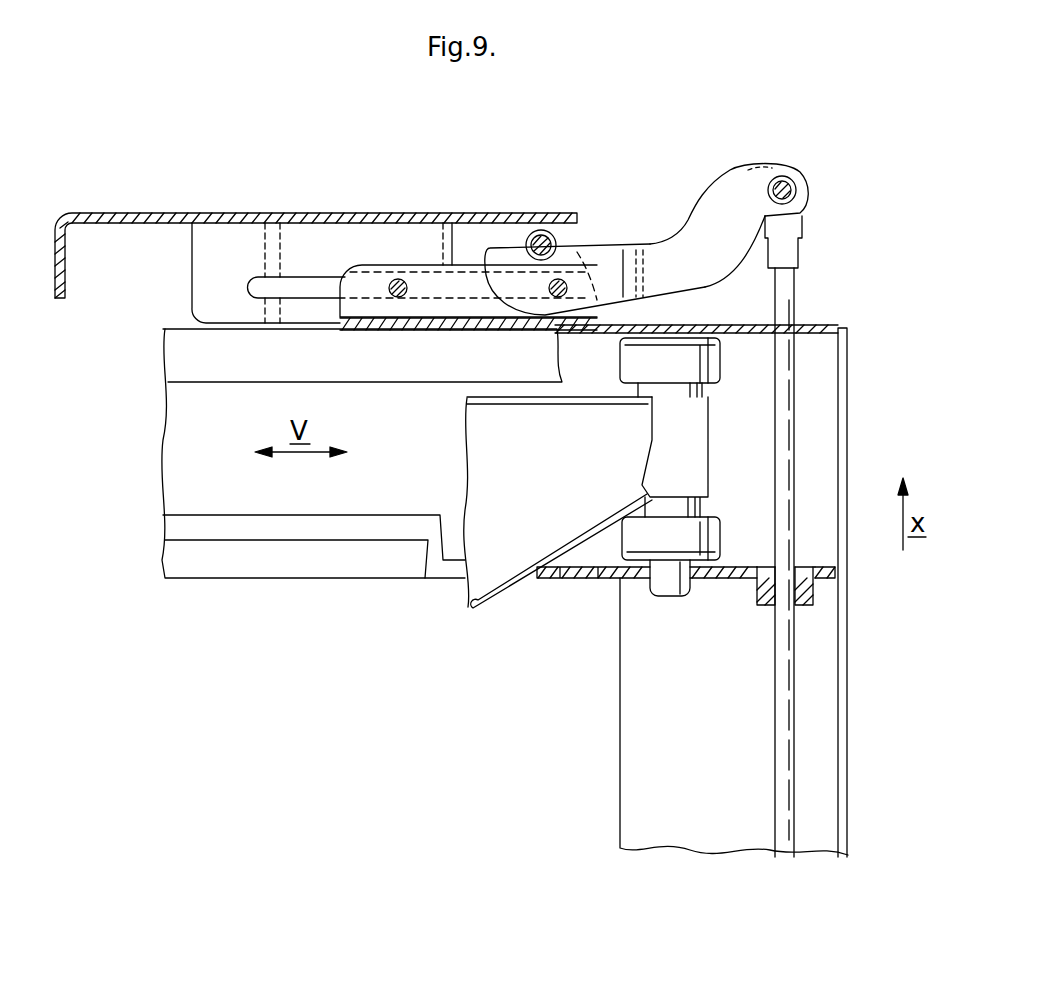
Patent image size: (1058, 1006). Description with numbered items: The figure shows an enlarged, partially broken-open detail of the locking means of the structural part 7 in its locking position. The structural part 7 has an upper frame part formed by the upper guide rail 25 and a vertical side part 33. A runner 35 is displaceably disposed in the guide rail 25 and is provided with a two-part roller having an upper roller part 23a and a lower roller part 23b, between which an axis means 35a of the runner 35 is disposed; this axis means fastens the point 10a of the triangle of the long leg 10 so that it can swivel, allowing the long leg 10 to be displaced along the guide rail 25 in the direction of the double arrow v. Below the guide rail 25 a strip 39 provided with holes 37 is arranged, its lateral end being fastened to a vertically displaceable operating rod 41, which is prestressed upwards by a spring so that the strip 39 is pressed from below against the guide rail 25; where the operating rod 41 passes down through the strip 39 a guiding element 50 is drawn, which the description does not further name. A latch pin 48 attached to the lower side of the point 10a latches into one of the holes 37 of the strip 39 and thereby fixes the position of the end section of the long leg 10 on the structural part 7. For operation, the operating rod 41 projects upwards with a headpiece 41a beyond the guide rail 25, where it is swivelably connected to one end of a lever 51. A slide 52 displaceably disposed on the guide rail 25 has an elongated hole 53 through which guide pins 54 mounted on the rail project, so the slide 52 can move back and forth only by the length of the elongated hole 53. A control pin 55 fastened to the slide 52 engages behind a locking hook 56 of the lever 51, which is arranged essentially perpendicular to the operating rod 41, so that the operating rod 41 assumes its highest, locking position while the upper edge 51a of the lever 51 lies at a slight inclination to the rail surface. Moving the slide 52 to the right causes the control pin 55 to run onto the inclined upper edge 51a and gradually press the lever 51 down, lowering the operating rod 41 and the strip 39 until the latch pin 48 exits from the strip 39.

The structural part 7 is at (845, 358).
The long leg 10 is at (490, 608).
The point of the triangle 10a is at (652, 470).
The upper roller part 23a is at (706, 368).
The lower roller part 23b is at (705, 548).
The upper guide rail 25 is at (185, 489).
The side part 33 is at (822, 795).
The runner 35 is at (706, 469).
The axis means 35a is at (682, 390).
The holes 37 is at (614, 580).
The strip 39 is at (738, 580).
The operating rod 41 is at (792, 700).
The headpiece 41a is at (793, 238).
The latch pin 48 is at (666, 582).
The bushing 50 is at (806, 592).
The lever 51 is at (700, 268).
The upper edge 51a is at (626, 250).
The slide 52 is at (460, 212).
The elongated hole 53 is at (290, 287).
The guide pins 54 is at (398, 284).
The control pin 55 is at (548, 238).
The locking hook 56 is at (508, 258).